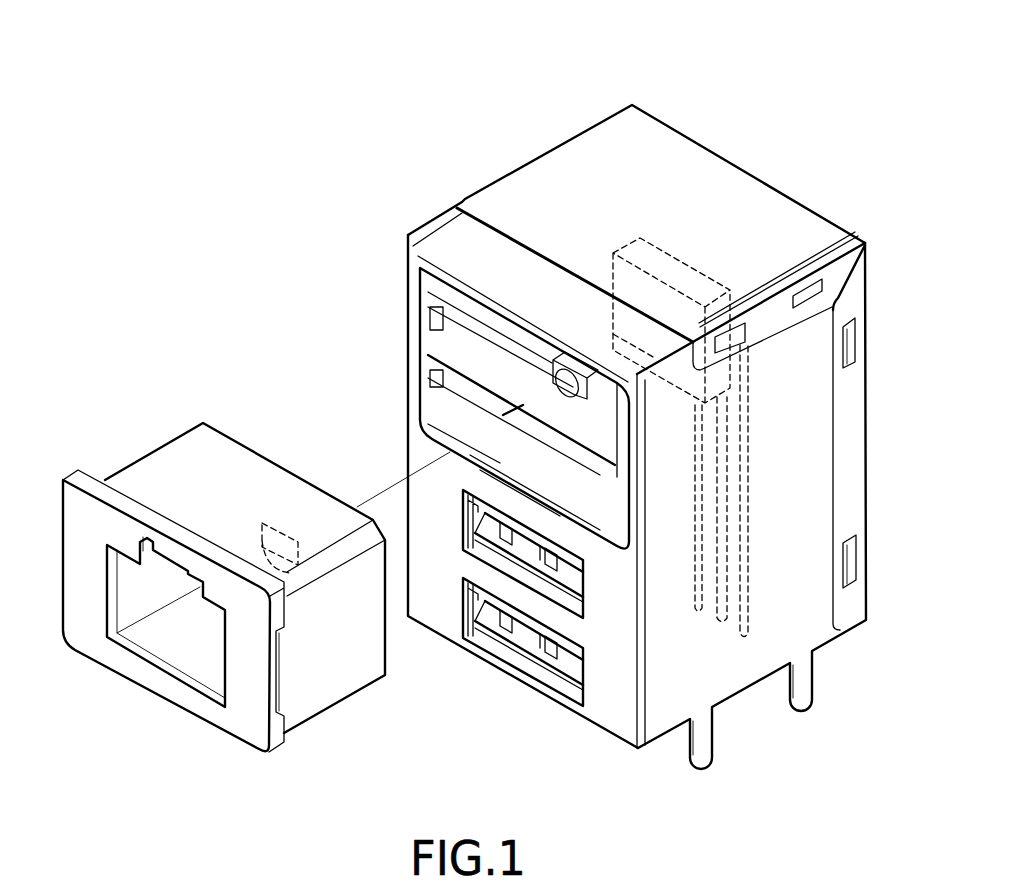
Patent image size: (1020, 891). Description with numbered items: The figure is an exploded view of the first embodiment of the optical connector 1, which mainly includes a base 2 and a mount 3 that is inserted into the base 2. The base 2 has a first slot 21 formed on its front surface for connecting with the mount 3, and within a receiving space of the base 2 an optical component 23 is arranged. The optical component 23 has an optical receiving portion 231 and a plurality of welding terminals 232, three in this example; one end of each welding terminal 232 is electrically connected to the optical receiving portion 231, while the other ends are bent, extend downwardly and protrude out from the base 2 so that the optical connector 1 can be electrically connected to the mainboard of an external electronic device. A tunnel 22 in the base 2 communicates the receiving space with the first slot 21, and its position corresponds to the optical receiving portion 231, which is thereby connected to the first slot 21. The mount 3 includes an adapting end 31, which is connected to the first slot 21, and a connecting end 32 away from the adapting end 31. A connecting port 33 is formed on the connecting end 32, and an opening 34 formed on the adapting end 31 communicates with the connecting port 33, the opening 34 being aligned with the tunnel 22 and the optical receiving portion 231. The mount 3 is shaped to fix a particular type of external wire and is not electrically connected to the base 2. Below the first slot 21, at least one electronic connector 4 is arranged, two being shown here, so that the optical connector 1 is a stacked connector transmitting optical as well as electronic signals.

The optical connector 1 is at (472, 27).
The base 2 is at (528, 153).
The first slot 21 is at (447, 403).
The tunnel 22 is at (567, 383).
The optical component 23 is at (678, 272).
The optical receiving portion 231 is at (613, 253).
The welding terminals 232 is at (748, 607).
The mount 3 is at (153, 443).
The adapting end 31 is at (250, 445).
The connecting end 32 is at (72, 540).
The connecting port 33 is at (183, 647).
The opening 34 is at (283, 547).
The electronic connector 4 is at (523, 662).